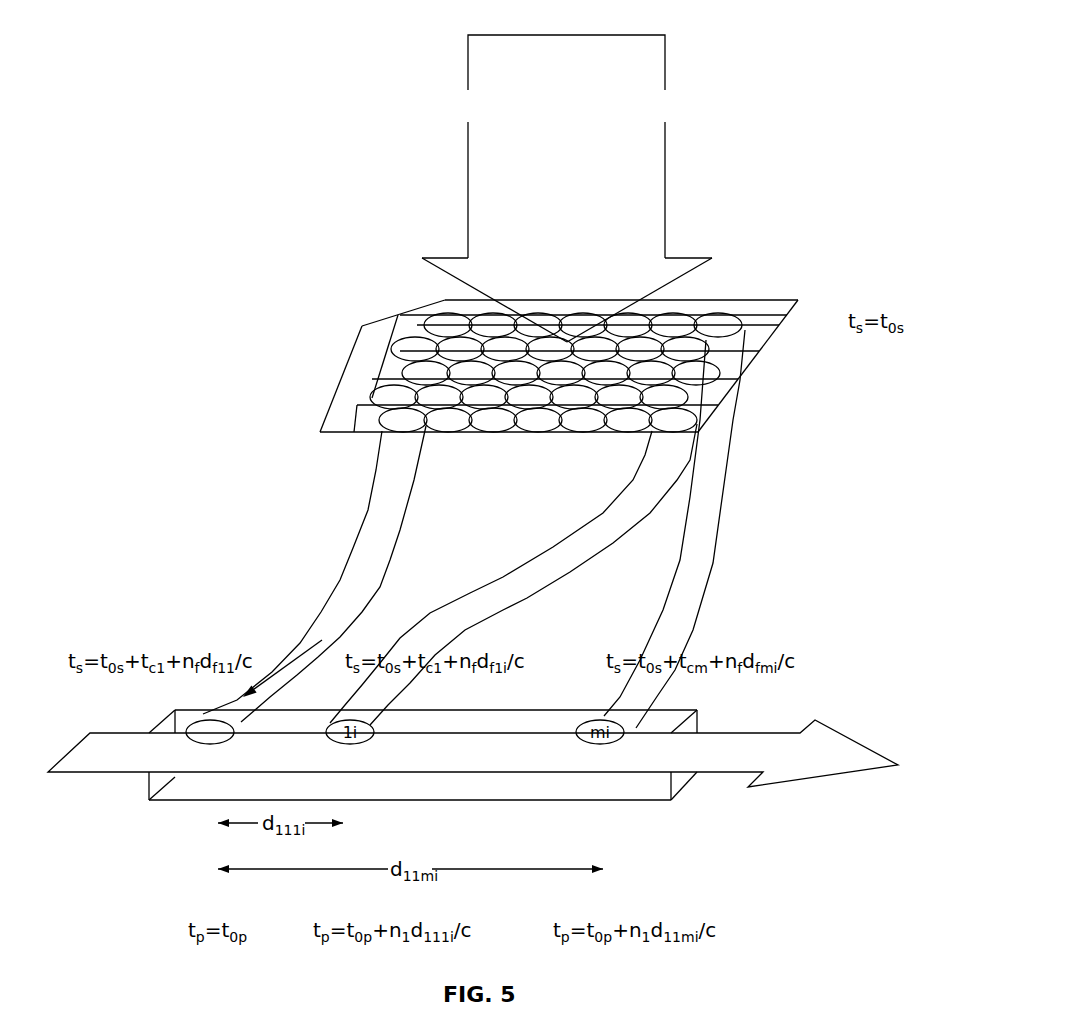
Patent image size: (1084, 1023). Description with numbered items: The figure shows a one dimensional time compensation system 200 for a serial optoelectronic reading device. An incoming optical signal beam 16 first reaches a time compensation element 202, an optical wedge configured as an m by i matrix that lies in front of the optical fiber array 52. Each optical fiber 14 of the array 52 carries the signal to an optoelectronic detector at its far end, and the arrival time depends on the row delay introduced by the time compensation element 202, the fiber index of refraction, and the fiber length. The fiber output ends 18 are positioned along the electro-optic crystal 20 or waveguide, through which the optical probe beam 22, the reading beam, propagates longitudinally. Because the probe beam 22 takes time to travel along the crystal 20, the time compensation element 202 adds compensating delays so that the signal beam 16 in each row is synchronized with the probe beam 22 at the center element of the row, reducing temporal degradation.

The one dimensional time compensation system 200 is at (762, 37).
The time compensation element 202 is at (370, 353).
The optical fiber array 52 is at (348, 431).
The optical fiber 14 is at (366, 511).
The optical signal beam 16 is at (312, 645).
The fiber output end 18 is at (237, 723).
The electro-optic crystal 20 is at (657, 787).
The optical probe beam 22 is at (117, 767).